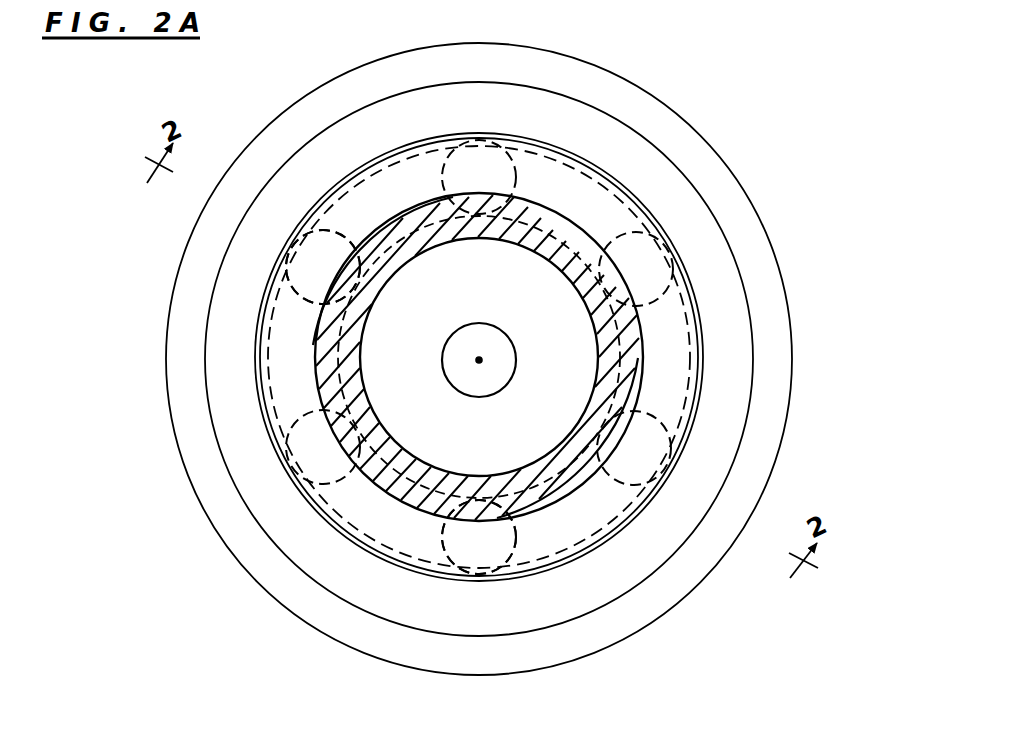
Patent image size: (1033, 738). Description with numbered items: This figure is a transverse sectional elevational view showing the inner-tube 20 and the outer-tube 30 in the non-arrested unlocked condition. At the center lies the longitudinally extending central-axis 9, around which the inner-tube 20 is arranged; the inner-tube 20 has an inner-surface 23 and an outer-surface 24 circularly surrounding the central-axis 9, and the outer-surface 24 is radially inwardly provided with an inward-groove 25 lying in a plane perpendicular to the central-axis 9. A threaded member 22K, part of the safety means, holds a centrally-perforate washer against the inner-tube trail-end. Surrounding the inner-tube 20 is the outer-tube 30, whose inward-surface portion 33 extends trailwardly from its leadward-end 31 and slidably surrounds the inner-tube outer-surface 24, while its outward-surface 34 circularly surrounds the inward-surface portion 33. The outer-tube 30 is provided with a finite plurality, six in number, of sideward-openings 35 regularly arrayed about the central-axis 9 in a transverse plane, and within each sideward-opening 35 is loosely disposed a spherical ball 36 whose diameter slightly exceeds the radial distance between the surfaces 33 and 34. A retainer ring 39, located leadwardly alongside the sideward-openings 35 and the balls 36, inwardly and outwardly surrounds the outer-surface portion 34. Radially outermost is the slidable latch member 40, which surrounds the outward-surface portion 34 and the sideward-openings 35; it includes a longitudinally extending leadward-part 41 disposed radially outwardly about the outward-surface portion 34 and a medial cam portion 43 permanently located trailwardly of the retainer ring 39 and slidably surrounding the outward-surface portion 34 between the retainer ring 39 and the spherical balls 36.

The central-axis 9 is at (477, 364).
The inner-tube 20 is at (571, 278).
The threaded member 22K is at (447, 350).
The inner-surface 23 is at (597, 350).
The outer-surface 24 is at (565, 498).
The inward-groove 25 is at (484, 214).
The outer-tube 30 is at (668, 322).
The leadward-end 31 is at (588, 186).
The inward-surface portion 33 is at (395, 498).
The outward-surface 34 is at (700, 386).
The sideward-openings 35 is at (303, 300).
The spherical ball 36 is at (312, 262).
The retainer ring 39 is at (650, 508).
The slidable latch member 40 is at (640, 78).
The leadward-part 41 is at (185, 308).
The medial cam portion 43 is at (375, 122).